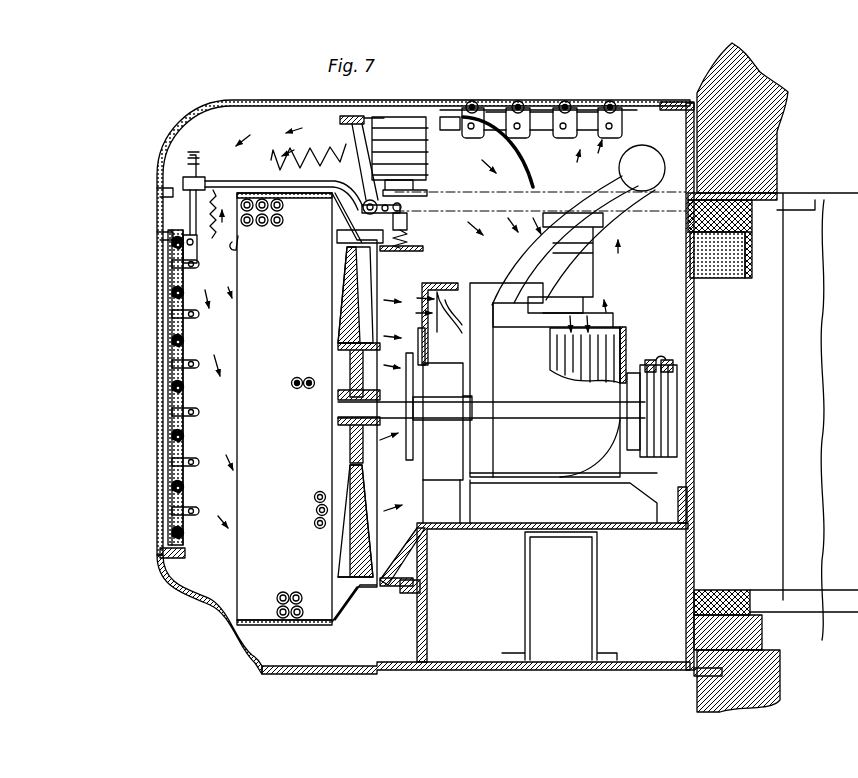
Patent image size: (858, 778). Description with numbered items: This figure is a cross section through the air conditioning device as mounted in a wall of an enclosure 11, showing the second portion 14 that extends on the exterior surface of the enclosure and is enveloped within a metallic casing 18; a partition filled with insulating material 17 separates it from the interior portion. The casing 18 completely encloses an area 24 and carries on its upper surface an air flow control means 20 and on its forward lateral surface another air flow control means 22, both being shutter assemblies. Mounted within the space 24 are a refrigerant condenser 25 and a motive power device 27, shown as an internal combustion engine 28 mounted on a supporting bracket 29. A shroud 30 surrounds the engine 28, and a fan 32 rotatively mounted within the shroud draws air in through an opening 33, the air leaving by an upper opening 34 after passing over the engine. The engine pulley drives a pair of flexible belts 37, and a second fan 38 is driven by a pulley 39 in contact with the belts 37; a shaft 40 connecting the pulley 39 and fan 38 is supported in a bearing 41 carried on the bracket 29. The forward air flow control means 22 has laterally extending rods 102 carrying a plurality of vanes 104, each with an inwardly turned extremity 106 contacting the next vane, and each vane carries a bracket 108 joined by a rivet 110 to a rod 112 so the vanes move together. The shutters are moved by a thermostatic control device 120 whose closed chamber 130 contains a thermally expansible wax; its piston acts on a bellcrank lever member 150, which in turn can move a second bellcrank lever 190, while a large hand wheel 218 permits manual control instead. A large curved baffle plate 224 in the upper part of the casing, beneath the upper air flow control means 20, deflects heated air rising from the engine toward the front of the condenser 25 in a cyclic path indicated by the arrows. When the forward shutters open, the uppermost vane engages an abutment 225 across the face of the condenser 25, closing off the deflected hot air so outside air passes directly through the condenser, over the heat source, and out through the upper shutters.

The enclosure 11 is at (778, 135).
The second portion 14 is at (480, 668).
The insulating material 17 is at (724, 272).
The metallic casing 18 is at (238, 106).
The air flow control means 20 is at (560, 100).
The air flow control means 22 is at (162, 282).
The area 24 is at (282, 120).
The refrigerant condenser 25 is at (252, 274).
The motive power device 27 is at (427, 284).
The internal combustion engine 28 is at (612, 330).
The supporting bracket 29 is at (598, 582).
The shroud 30 is at (492, 365).
The fan 32 is at (458, 287).
The opening 33 is at (405, 394).
The upper opening 34 is at (492, 284).
The flexible belts 37 is at (664, 360).
The second fan 38 is at (368, 292).
The pulley 39 is at (672, 430).
The shaft 40 is at (570, 414).
The bearing 41 is at (480, 418).
The rods 102 is at (175, 345).
The vanes 104 is at (172, 420).
The inwardly turned extremity 106 is at (184, 438).
The bracket 108 is at (193, 404).
The rivet 110 is at (199, 462).
The rod 112 is at (195, 344).
The control device 120 is at (430, 154).
The closed chamber 130 is at (428, 166).
The bellcrank lever member 150 is at (362, 146).
The second bellcrank lever 190 is at (262, 176).
The hand wheel 218 is at (425, 247).
The baffle plate 224 is at (533, 168).
The abutment 225 is at (238, 252).